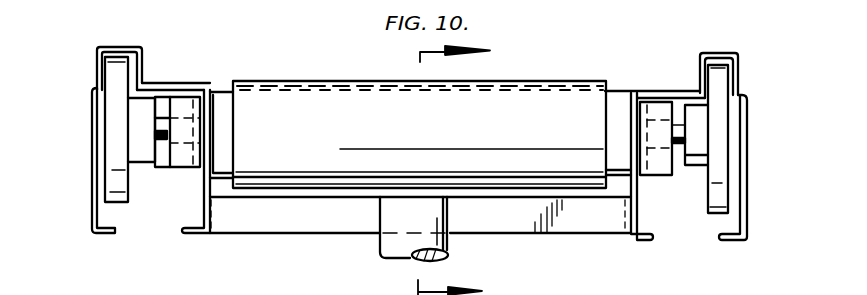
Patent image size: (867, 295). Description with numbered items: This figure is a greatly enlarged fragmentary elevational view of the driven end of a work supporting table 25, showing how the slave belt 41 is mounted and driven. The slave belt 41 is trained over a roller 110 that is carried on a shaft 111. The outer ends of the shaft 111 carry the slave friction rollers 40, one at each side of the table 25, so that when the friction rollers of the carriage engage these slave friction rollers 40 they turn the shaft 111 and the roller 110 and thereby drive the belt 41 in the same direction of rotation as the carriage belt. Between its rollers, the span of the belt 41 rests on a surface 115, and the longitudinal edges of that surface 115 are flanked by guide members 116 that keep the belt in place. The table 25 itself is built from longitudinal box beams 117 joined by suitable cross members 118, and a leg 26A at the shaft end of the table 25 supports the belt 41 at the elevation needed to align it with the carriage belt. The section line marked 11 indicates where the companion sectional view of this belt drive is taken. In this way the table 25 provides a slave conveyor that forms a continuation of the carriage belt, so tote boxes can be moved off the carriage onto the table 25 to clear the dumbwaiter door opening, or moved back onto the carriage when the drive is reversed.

The guide member 116 is at (116, 47).
The surface 115 is at (180, 83).
The longitudinal box beam 117 is at (91, 107).
The slave friction roller 40 is at (113, 142).
The shaft 111 is at (680, 150).
The work supporting table 25 is at (88, 198).
The roller 110 is at (229, 126).
The slave belt 41 is at (331, 81).
The cross member 118 is at (272, 227).
The leg 26A is at (388, 242).
The section line 11- 11 is at (466, 168).